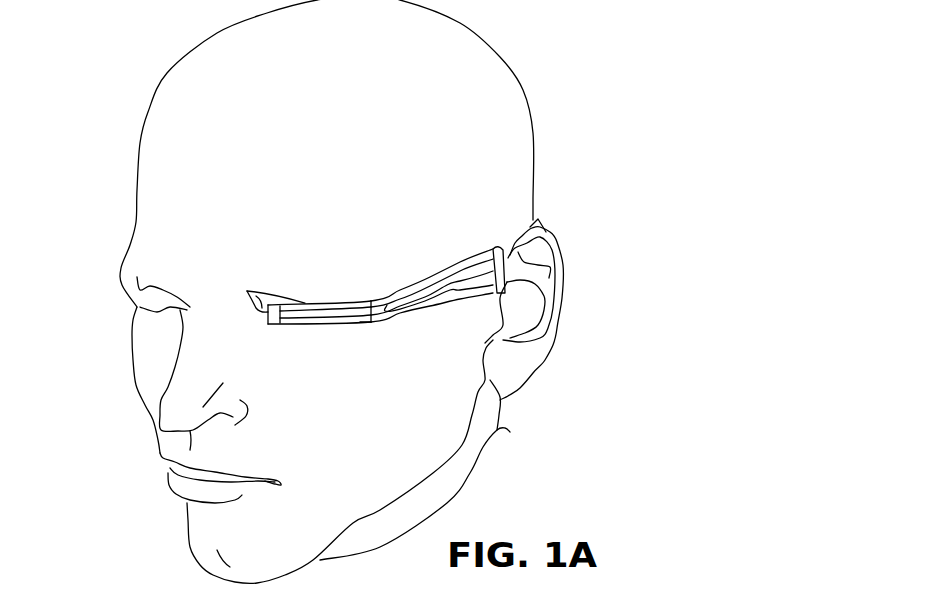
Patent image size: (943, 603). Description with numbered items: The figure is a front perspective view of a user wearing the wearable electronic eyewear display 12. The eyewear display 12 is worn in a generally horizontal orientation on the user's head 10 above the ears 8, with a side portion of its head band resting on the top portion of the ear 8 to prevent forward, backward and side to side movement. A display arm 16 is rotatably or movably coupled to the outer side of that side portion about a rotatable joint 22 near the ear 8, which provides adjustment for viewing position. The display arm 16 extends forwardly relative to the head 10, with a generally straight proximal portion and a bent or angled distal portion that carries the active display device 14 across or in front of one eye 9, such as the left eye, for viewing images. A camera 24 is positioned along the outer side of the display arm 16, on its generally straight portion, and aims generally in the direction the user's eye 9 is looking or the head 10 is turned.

The ear 8 is at (540, 347).
The eye 9 is at (284, 262).
The head 10 is at (157, 160).
The wearable electronic eyewear display 12 is at (430, 232).
The active display device 14 is at (273, 333).
The display arm 16 is at (458, 298).
The rotatable joint 22 is at (498, 258).
The camera 24 is at (373, 325).